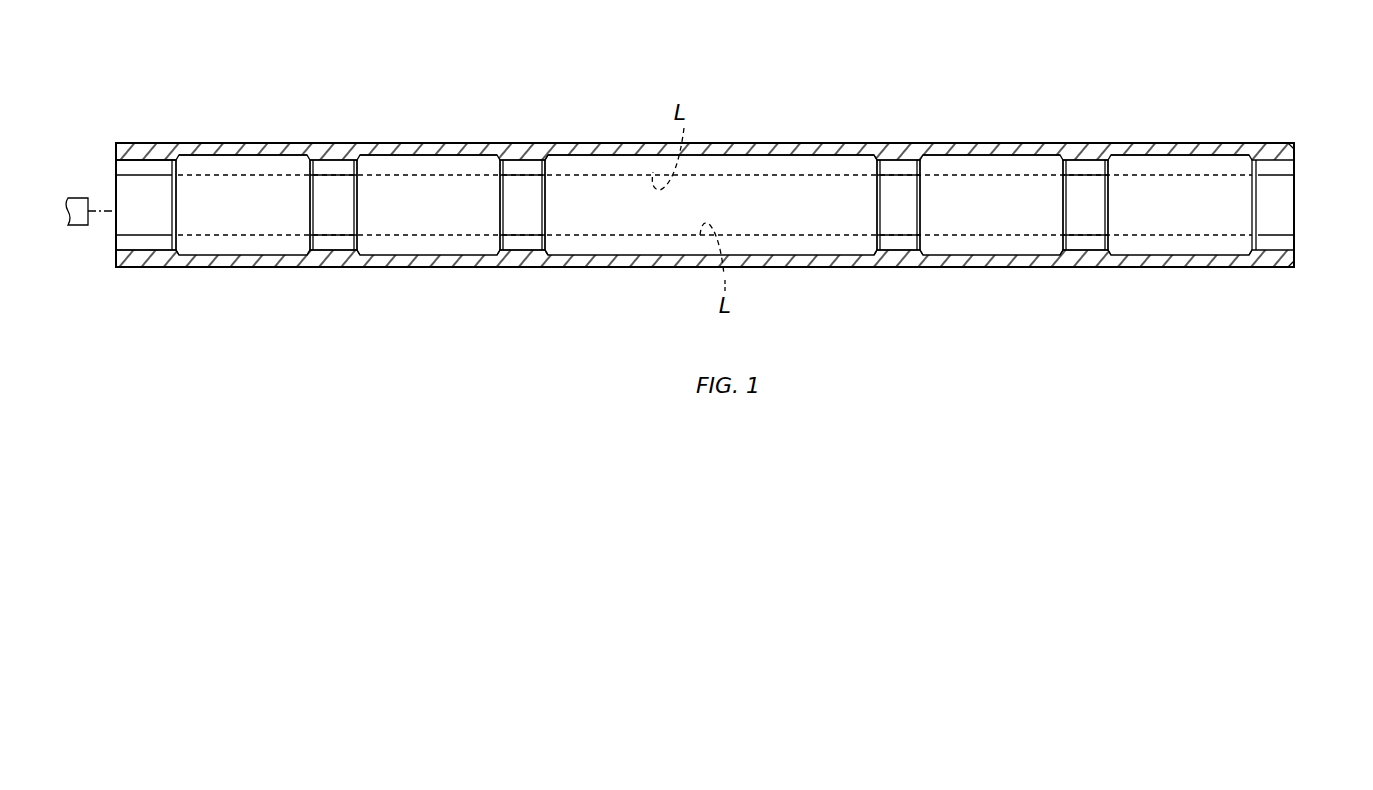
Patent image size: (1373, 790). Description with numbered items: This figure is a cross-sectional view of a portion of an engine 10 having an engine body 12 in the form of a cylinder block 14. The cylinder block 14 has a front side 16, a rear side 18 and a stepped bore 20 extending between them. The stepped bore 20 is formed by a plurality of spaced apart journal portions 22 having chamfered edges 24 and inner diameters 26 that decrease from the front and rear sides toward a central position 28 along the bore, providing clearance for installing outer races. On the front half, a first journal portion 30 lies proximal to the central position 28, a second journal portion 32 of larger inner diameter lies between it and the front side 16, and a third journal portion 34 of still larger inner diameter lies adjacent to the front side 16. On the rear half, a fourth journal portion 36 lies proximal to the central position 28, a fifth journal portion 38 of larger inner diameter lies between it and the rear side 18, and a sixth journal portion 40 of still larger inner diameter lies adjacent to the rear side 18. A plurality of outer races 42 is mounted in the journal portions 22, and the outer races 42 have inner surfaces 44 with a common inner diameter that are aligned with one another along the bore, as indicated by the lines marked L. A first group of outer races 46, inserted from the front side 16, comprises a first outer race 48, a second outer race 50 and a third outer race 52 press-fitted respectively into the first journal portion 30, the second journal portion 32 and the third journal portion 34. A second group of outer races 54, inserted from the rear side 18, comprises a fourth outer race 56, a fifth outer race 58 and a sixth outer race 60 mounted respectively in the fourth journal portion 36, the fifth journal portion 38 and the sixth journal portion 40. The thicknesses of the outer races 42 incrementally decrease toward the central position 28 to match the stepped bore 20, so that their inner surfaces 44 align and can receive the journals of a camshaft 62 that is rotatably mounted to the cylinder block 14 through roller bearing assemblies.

The engine 10 is at (99, 104).
The engine body 12 is at (114, 136).
The cylinder block 14 is at (116, 156).
The front side 16 is at (116, 147).
The rear side 18 is at (1298, 146).
The stepped bore 20 is at (108, 194).
The journal portions 22 is at (140, 168).
The chamfered edges 24 is at (117, 262).
The inner diameters 26 is at (160, 226).
The central position 28 is at (573, 103).
The first journal portion 30 is at (565, 155).
The second journal portion 32 is at (358, 157).
The third journal portion 34 is at (183, 162).
The fourth journal portion 36 is at (860, 156).
The fifth journal portion 38 is at (1050, 160).
The sixth journal portion 40 is at (1240, 156).
The outer races 42 is at (182, 252).
The inner surfaces 44 is at (176, 212).
The first group of outer races 46 is at (120, 303).
The first outer race 48 is at (520, 168).
The second outer race 50 is at (322, 168).
The third outer race 52 is at (163, 168).
The second group of outer races 54 is at (1290, 307).
The fourth outer race 56 is at (878, 160).
The fifth outer race 58 is at (1068, 167).
The sixth outer race 60 is at (1292, 148).
The camshaft 62 is at (74, 228).